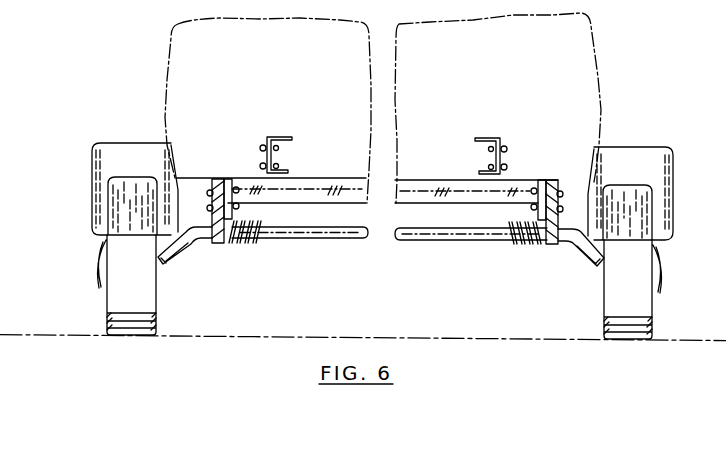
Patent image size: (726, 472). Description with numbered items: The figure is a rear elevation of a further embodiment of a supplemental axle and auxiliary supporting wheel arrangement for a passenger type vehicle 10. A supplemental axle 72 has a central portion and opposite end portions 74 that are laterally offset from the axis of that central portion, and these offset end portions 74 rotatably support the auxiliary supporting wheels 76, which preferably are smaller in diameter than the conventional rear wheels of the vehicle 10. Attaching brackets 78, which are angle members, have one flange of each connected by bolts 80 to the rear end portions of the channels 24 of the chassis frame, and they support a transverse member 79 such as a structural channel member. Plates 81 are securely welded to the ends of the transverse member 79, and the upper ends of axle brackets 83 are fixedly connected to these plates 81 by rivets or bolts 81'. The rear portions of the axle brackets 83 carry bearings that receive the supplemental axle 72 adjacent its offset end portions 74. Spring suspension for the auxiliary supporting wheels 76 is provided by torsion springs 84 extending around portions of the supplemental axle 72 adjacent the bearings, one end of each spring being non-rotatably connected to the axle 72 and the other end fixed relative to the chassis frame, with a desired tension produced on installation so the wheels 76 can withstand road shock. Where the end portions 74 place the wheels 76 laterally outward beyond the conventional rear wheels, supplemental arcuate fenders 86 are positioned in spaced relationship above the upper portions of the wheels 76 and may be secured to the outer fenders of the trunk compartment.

The vehicle 10 is at (167, 80).
The channels 24 is at (290, 137).
The supplemental axle 72 is at (302, 234).
The opposite end portions 74 is at (167, 265).
The auxiliary supporting wheels 76 is at (119, 302).
The attaching brackets 78 is at (259, 143).
The transverse member 79 is at (328, 192).
The bolts 80 is at (260, 165).
The plates 81 is at (385, 205).
The rivets or bolts 81' is at (401, 188).
The axle brackets 83 is at (216, 245).
The torsion springs 84 is at (244, 243).
The supplemental arcuate fenders 86 is at (103, 143).